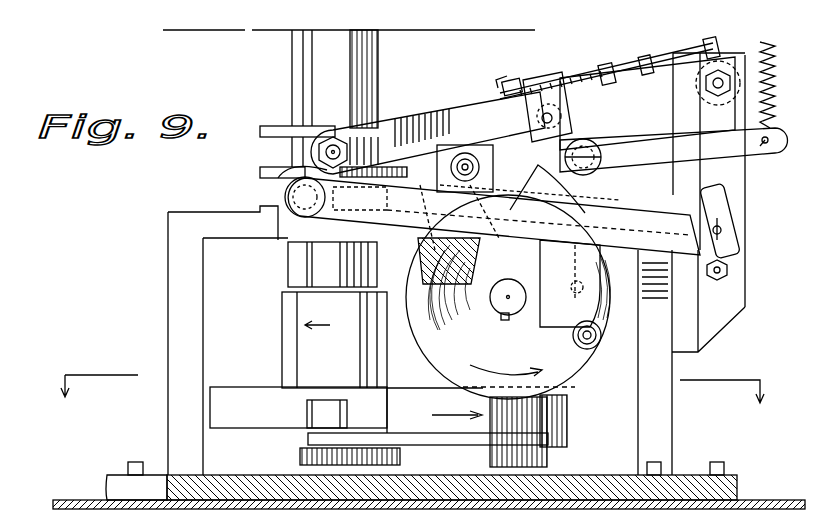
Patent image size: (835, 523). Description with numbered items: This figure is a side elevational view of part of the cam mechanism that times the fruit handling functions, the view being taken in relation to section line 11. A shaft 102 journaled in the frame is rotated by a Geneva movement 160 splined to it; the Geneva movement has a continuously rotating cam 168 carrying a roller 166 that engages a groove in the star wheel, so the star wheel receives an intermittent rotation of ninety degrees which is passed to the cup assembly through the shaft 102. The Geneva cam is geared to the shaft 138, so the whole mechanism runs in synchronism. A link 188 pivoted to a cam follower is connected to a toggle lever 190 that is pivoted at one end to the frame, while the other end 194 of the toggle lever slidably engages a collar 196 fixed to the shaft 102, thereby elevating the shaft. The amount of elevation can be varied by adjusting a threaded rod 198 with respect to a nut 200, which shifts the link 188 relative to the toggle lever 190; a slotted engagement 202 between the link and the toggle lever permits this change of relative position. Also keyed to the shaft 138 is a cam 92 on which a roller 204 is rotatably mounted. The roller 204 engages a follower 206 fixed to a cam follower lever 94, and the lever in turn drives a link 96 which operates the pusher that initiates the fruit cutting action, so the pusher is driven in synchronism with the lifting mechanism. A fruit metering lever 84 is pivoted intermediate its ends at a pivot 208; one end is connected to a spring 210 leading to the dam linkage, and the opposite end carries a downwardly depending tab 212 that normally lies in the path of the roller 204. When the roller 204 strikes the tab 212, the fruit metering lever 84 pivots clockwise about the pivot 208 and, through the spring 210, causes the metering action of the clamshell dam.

The section line 11- 11 is at (411, 377).
The fruit metering lever 84 is at (778, 138).
The cam 92 is at (441, 350).
The cam follower lever 94 is at (628, 247).
The link 96 is at (724, 205).
The shaft 102 is at (366, 47).
The shaft 138 is at (500, 303).
The Geneva movement 160 is at (262, 400).
The roller 166 is at (328, 410).
The cam 168 is at (570, 437).
The link 188 is at (543, 76).
The toggle lever 190 is at (415, 125).
The other end of the toggle lever 194 is at (358, 128).
The collar 196 is at (273, 108).
The threaded rod 198 is at (672, 42).
The nut 200 is at (520, 68).
The slotted engagement 202 is at (579, 106).
The roller 204 is at (612, 337).
The follower 206 is at (552, 322).
The pivot 208 is at (592, 140).
The spring 210 is at (780, 28).
The tab 212 is at (384, 262).